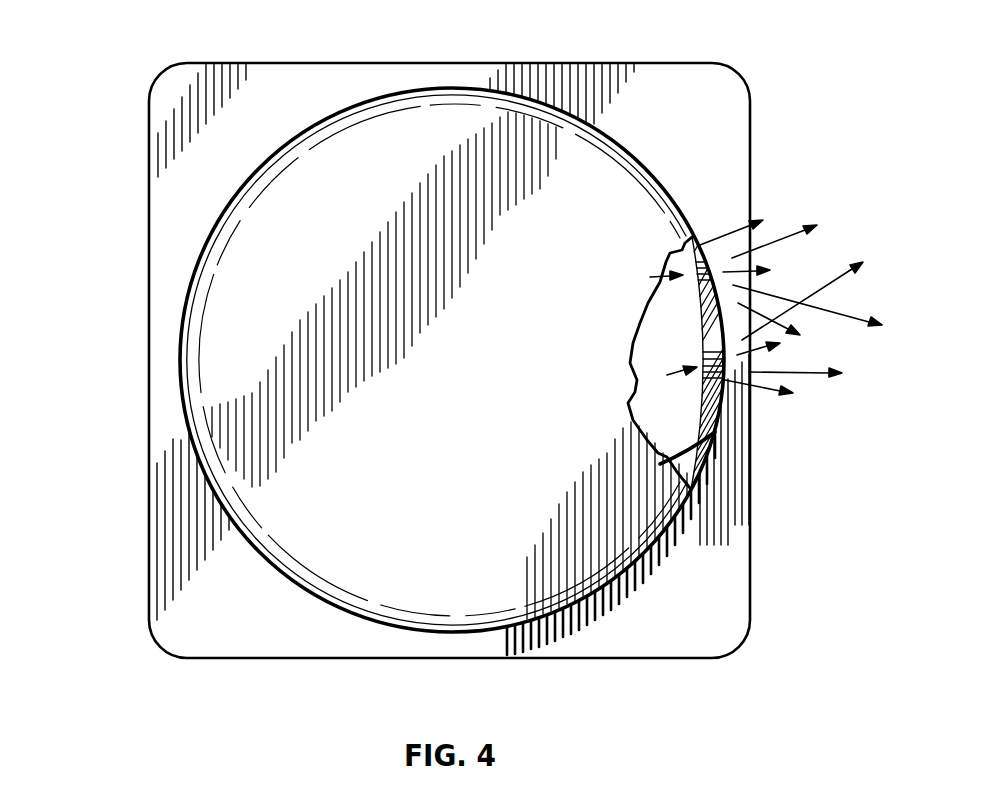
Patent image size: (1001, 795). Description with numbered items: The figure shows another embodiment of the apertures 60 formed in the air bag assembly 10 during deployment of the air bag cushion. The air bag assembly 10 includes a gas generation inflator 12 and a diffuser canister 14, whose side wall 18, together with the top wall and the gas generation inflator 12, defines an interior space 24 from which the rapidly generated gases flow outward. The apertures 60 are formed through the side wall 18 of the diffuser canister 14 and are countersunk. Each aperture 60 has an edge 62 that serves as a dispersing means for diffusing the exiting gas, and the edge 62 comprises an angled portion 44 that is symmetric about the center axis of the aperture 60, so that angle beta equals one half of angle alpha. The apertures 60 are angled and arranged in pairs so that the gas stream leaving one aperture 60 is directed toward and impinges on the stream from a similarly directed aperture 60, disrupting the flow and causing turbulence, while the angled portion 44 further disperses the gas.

The air bag assembly 10 is at (137, 61).
The gas generation inflator 12 is at (185, 625).
The diffuser canister 14 is at (250, 256).
The side wall 18 is at (698, 450).
The interior space 24 is at (652, 407).
The angled portion 44 is at (699, 308).
The apertures 60 is at (717, 353).
The edge 62 is at (698, 262).